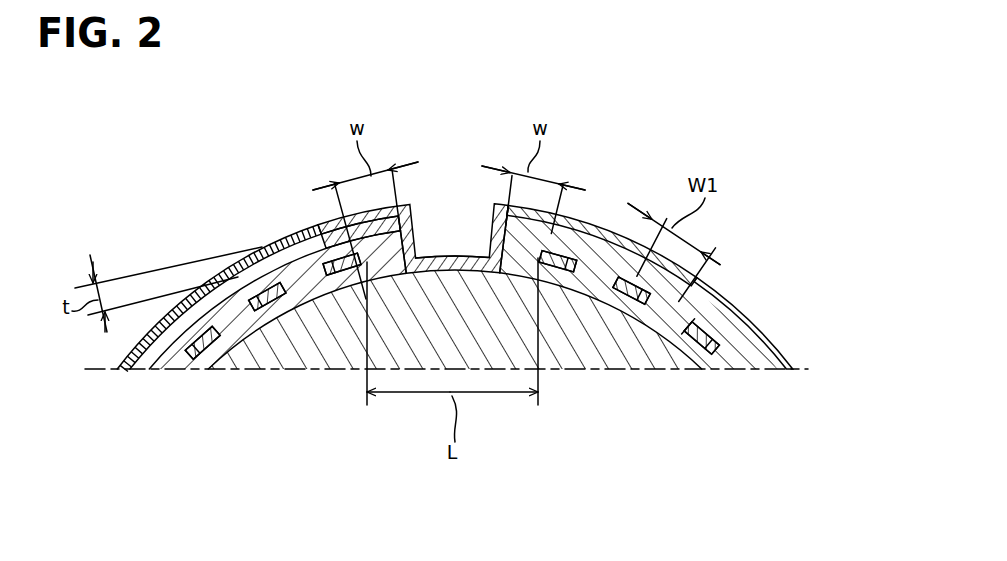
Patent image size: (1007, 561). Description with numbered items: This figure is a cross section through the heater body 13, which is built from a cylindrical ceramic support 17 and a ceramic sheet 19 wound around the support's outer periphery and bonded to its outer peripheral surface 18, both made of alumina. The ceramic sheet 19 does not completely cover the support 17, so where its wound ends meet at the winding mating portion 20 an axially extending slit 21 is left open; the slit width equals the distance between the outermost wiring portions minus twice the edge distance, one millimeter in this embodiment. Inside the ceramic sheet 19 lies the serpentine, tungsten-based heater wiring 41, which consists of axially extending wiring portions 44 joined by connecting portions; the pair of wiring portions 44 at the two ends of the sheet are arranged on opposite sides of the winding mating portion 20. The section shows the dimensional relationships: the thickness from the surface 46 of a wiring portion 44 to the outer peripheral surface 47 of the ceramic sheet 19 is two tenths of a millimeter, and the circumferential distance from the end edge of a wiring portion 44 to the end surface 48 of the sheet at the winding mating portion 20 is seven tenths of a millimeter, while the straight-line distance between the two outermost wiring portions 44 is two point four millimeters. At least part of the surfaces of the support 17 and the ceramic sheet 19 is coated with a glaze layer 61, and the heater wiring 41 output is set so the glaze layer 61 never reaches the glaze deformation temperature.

The heater body 13 is at (205, 150).
The support 17 is at (296, 374).
The outer peripheral surface 18 is at (457, 258).
The ceramic sheet 19 is at (724, 319).
The winding mating portion 20 is at (436, 160).
The slit 21 is at (485, 218).
The heater wiring 41 is at (590, 216).
The wiring portions 44 is at (265, 303).
The surface 46 is at (330, 258).
The outer peripheral surface 47 is at (322, 233).
The end surface 48 is at (420, 240).
The glaze layer 61 is at (237, 258).